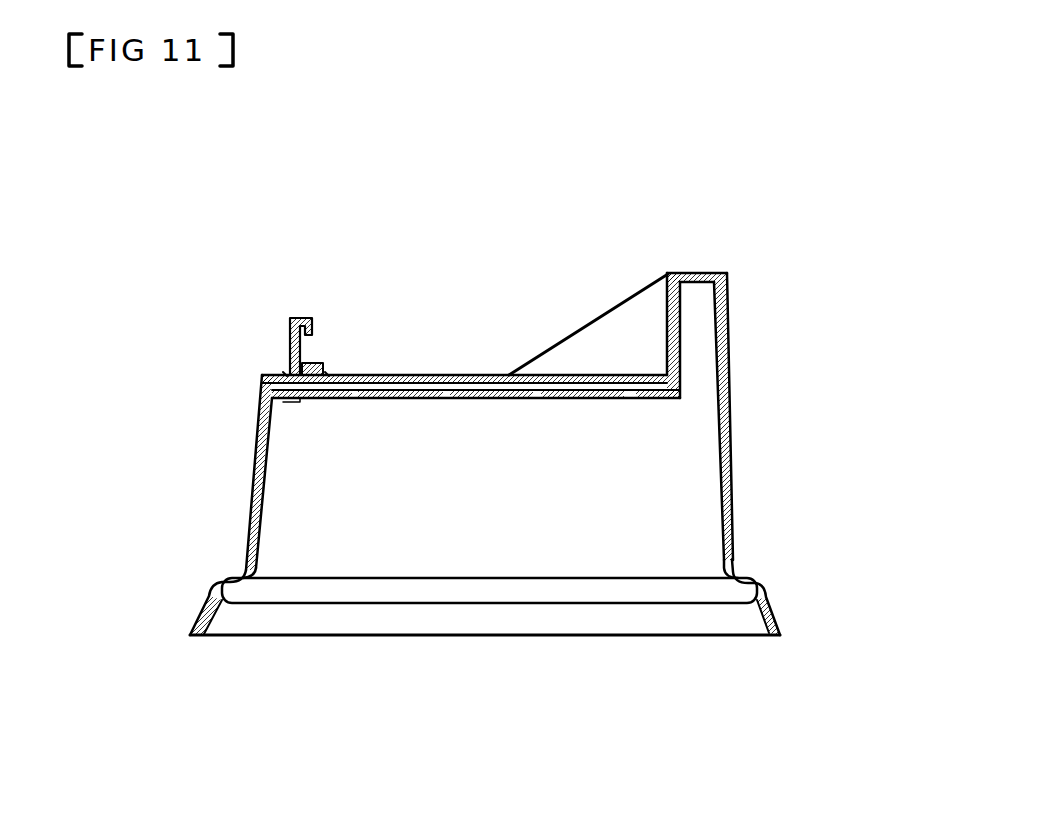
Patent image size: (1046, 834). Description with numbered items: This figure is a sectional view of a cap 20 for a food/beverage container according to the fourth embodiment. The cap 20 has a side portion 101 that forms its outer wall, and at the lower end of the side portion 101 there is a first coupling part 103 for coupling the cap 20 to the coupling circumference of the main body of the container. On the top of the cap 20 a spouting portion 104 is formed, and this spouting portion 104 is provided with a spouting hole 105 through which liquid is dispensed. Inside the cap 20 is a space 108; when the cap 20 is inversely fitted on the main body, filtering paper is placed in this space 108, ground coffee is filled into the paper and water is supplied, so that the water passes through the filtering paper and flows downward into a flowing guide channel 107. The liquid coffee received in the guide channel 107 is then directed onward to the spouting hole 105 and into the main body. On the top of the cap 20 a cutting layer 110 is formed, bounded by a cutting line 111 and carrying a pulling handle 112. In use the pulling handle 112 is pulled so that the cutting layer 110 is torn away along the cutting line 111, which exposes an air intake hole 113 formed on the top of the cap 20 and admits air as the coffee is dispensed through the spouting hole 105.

The cap 20 is at (770, 468).
The side portion 101 is at (252, 494).
The first coupling part 103 is at (213, 578).
The spouting portion 104 is at (729, 312).
The spouting hole 105 is at (693, 300).
The flowing guide channel 107 is at (491, 399).
The space 108 is at (563, 528).
The cutting layer 110 is at (318, 363).
The cutting line 111 is at (282, 374).
The pulling handle 112 is at (298, 316).
The air intake hole 113 is at (298, 400).